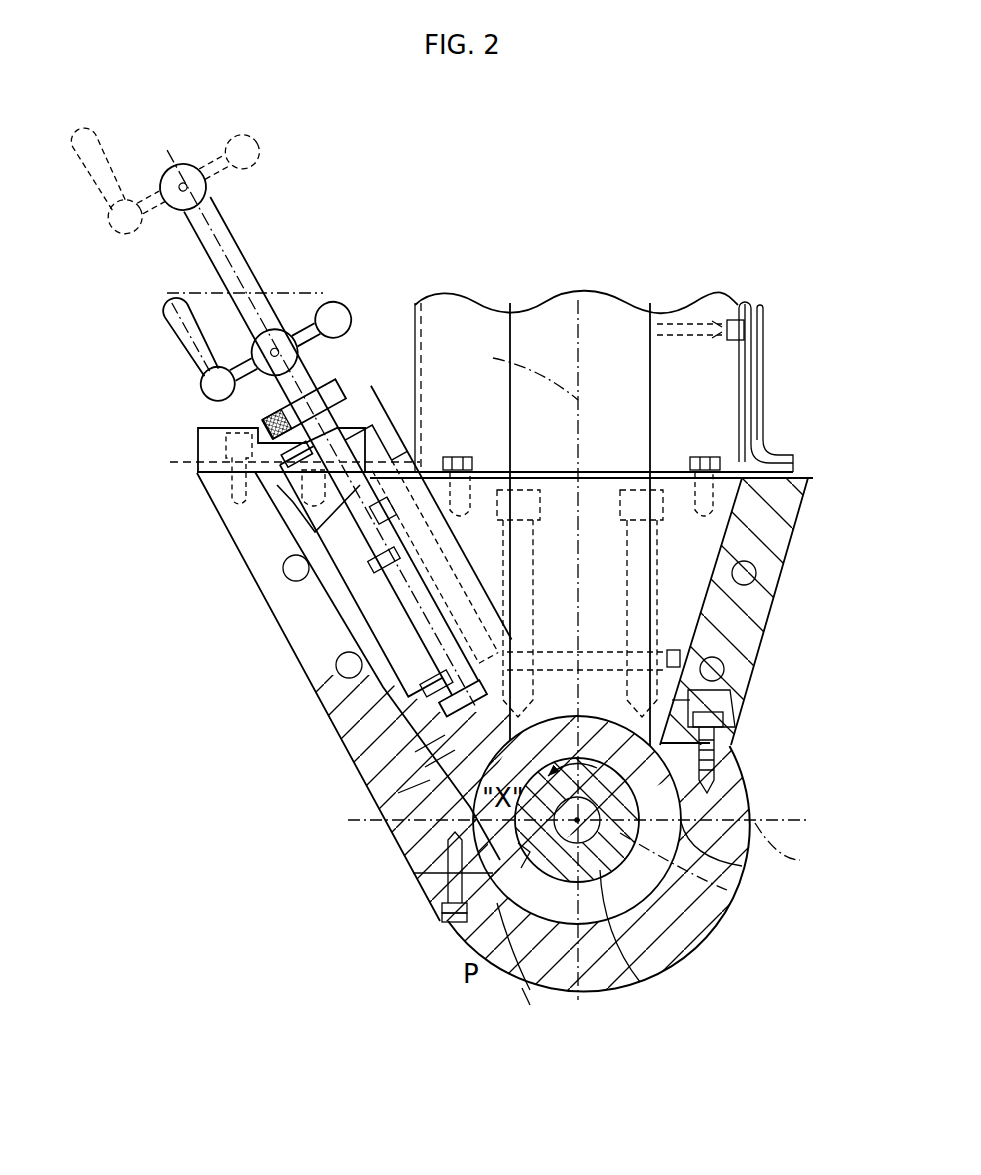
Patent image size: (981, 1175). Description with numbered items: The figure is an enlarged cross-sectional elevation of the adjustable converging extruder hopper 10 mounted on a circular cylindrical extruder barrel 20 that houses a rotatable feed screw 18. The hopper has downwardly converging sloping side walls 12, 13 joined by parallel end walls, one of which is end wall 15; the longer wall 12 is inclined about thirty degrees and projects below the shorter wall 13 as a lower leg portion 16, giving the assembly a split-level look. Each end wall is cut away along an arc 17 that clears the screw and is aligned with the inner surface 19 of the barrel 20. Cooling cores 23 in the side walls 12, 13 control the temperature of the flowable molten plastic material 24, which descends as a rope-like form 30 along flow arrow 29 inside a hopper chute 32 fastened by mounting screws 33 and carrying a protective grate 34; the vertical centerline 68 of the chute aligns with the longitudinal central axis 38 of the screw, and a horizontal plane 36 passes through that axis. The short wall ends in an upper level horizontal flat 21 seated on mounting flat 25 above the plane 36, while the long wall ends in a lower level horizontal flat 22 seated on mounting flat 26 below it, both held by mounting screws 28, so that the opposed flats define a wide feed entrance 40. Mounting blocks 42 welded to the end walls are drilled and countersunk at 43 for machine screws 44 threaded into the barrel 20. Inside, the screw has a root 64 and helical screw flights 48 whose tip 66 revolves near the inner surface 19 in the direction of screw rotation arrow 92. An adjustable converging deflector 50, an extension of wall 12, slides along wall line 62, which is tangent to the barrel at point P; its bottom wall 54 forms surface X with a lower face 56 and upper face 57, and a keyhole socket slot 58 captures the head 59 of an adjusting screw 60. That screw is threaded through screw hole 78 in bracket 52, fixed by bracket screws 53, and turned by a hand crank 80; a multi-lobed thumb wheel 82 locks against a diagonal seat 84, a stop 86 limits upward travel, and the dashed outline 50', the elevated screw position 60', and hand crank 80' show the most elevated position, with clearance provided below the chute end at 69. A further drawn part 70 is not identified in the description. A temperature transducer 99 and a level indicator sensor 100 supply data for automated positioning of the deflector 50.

The adjustable converging extruder hopper 10 is at (792, 552).
The sloping side wall 12 is at (257, 550).
The sloping side wall 13 is at (783, 500).
The end wall 15 is at (713, 533).
The lower leg portion 16 is at (420, 853).
The arc 17 is at (608, 718).
The feed screw 18 is at (682, 942).
The inner surface 19 is at (730, 852).
The extruder barrel 20 is at (752, 793).
The upper level horizontal flat 21 is at (720, 743).
The lower level horizontal flat 22 is at (412, 873).
The cooling cores 23 is at (283, 572).
The flowable molten plastic material 24 is at (600, 320).
The mounting flat 25 is at (730, 731).
The mounting flat 26 is at (447, 920).
The mounting screws 28 is at (460, 940).
The flow arrow 29 is at (580, 297).
The rope-like form 30 is at (502, 335).
The hopper chute 32 is at (762, 402).
The mounting screws 33 is at (460, 455).
The protective grate 34 is at (765, 330).
The horizontal plane 36 is at (595, 851).
The longitudinal central axis 38 is at (727, 890).
The feed entrance 40 is at (640, 698).
The mounting blocks 42 is at (717, 457).
The drilled and countersunk hole 43 is at (507, 570).
The machine screws 44 is at (505, 487).
The screw flights 48 is at (533, 1006).
The adjustable converging deflector 50 is at (350, 572).
The elevated outline of deflector 50' is at (245, 244).
The bracket 52 is at (202, 440).
The bracket screws 53 is at (279, 464).
The bottom wall 54 is at (427, 760).
The lower face 56 is at (400, 790).
The upper face 57 is at (423, 760).
The keyhole socket slot 58 is at (463, 667).
The head 59 is at (383, 560).
The adjusting screw 60 is at (371, 519).
The rod alternate position 60' is at (317, 430).
The wall line 62 is at (367, 613).
The root 64 is at (640, 982).
The tip 66 is at (497, 913).
The vertical centerline 68 is at (519, 372).
The lower end of the chute 69 is at (418, 466).
The cylinder 70 is at (463, 587).
The screw hole 78 is at (373, 390).
The hand crank 80 is at (225, 319).
The hand crank in elevated position 80' is at (203, 148).
The multi-lobed lock nut or thumb wheel 82 is at (267, 420).
The diagonal seat 84 is at (333, 403).
The stop 86 is at (297, 495).
The screw rotation arrow 92 is at (597, 767).
The feedback transducer 99 is at (724, 315).
The level indicator sensor 100 is at (733, 677).